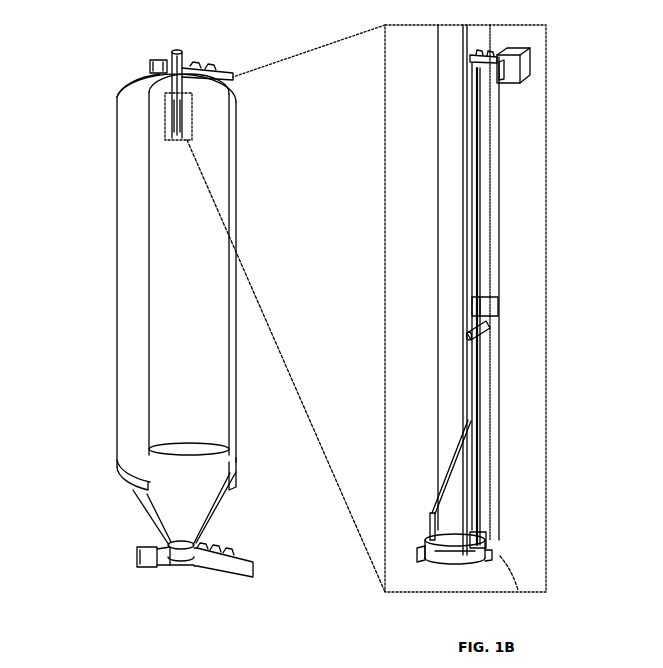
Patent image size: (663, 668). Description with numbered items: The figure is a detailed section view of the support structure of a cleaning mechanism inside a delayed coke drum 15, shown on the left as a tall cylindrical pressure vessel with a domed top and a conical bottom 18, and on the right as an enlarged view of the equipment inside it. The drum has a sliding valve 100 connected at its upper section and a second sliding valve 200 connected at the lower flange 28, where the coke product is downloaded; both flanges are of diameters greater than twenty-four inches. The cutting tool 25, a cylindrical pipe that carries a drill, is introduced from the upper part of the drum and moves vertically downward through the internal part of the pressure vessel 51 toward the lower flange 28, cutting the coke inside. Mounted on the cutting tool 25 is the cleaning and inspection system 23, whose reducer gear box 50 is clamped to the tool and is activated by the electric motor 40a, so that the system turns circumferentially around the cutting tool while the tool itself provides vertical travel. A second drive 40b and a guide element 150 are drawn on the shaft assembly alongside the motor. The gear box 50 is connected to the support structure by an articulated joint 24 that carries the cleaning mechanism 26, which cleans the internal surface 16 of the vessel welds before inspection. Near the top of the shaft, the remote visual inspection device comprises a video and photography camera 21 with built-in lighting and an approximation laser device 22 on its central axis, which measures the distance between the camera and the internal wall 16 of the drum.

The delayed coke drum 15 is at (124, 80).
The internal surface of the pressure vessel 16 is at (117, 243).
The conical bottom 18 is at (135, 509).
The video and photography camera 21 is at (520, 66).
The approximation laser device 22 is at (502, 78).
The cleaning and inspection system 23 is at (490, 277).
The articulated joint 24 is at (480, 546).
The cutting tool 25 is at (176, 84).
The cleaning mechanism 26 is at (490, 52).
The lower flange 28 is at (205, 548).
The electric motor 40a is at (430, 522).
The upper actuator 40b is at (486, 332).
The reducer gear box 50 is at (418, 552).
The internal part of the pressure vessel 51 is at (189, 264).
The upper section sliding valve 100 is at (217, 66).
The guide block 150 is at (488, 312).
The lower sliding valve 200 is at (137, 566).